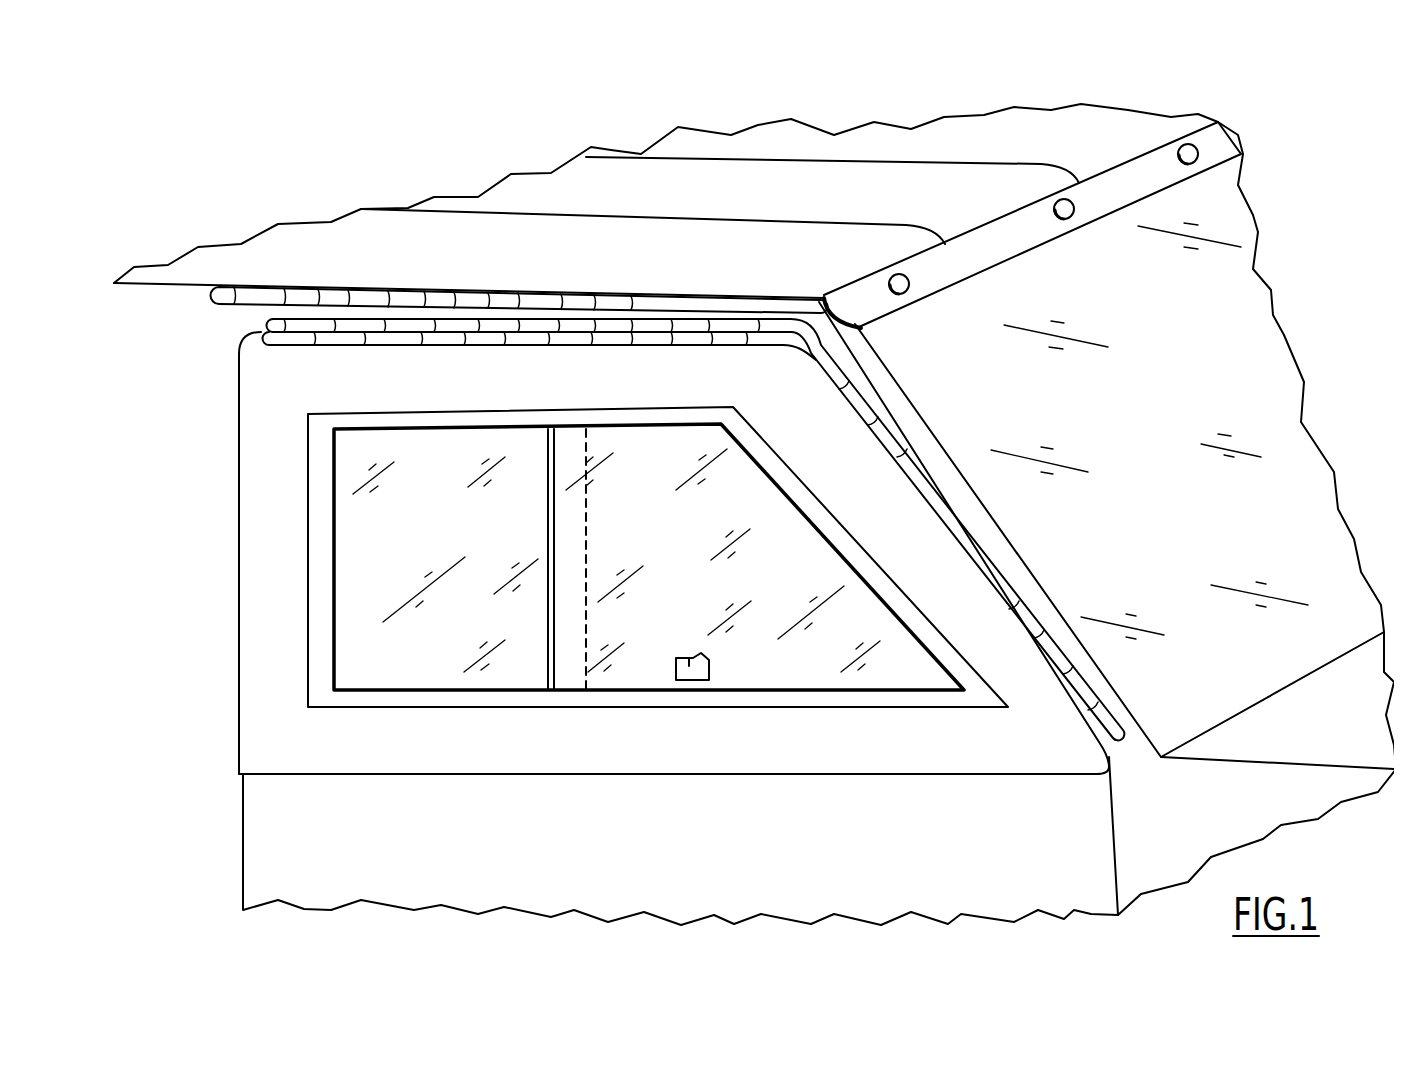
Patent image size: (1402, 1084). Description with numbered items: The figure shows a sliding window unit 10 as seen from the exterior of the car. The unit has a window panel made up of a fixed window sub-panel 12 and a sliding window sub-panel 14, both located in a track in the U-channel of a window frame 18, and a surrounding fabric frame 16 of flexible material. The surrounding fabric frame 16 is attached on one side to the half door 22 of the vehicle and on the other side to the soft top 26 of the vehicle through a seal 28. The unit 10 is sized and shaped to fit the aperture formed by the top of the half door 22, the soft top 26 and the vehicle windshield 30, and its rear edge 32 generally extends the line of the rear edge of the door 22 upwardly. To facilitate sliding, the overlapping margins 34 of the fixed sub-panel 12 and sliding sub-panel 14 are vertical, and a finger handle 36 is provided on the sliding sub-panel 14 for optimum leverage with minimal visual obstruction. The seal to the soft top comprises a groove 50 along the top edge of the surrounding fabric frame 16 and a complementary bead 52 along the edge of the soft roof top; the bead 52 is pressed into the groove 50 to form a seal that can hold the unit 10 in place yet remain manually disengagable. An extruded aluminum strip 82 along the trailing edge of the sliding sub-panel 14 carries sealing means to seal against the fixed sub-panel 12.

The sliding window unit 10 is at (187, 622).
The fixed window sub-panel 12 is at (456, 541).
The sliding window sub-panel 14 is at (661, 541).
The surrounding fabric frame 16 is at (253, 407).
The window frame 18 is at (315, 700).
The half door 22 is at (640, 868).
The soft top 26 is at (768, 206).
The seal 28 is at (197, 283).
The vehicle windshield 30 is at (1154, 436).
The rear edge 32 is at (238, 507).
The overlapping margins 34 is at (563, 615).
The finger handle 36 is at (692, 657).
The groove 50 is at (740, 327).
The bead 52 is at (672, 298).
The extruded aluminum strip 82 is at (548, 592).